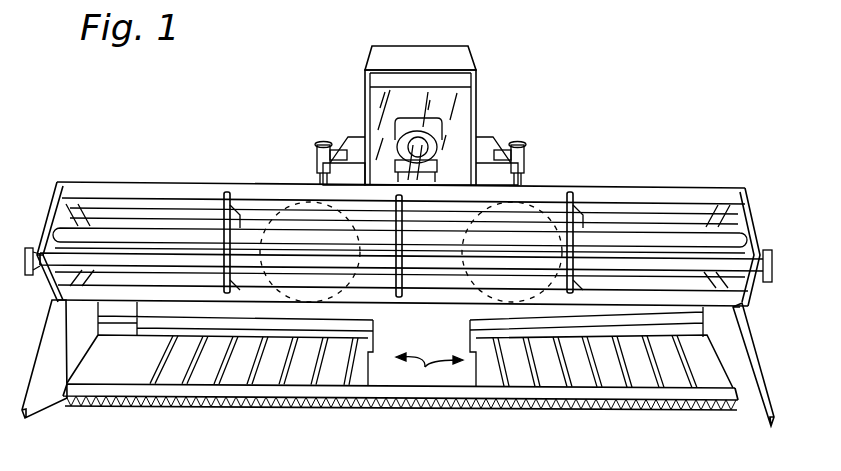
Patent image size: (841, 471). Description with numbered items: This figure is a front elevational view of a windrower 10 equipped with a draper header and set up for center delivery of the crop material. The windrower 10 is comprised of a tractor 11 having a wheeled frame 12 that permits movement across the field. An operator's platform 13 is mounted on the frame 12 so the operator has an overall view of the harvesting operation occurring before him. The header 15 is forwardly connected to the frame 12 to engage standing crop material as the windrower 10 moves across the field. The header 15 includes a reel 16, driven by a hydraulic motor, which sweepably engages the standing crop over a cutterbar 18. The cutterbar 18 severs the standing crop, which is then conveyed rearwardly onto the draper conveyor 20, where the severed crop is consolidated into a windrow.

The windrower 10 is at (561, 57).
The tractor 11 is at (480, 138).
The wheeled frame 12 is at (530, 185).
The operator's platform 13 is at (366, 79).
The header 15 is at (746, 334).
The reel 16 is at (673, 190).
The cutterbar 18 is at (563, 405).
The draper conveyor 20 is at (425, 367).